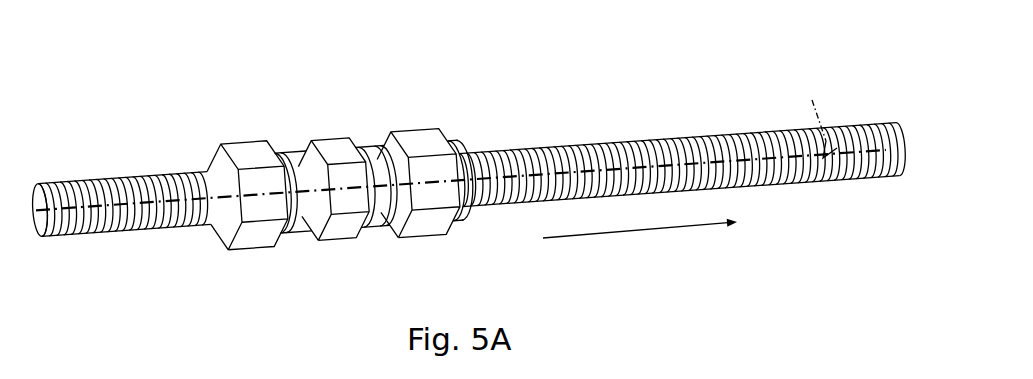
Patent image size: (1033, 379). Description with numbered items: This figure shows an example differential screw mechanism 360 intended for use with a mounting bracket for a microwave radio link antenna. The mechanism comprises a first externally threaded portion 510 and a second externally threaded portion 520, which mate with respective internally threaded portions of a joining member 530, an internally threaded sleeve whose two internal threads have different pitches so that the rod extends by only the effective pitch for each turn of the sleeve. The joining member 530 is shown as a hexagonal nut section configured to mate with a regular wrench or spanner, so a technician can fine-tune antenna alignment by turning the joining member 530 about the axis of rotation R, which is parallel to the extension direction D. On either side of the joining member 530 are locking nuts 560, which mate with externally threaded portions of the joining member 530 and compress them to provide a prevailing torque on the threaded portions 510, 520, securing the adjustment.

The differential screw mechanism 360 is at (96, 59).
The first externally threaded portion 510 is at (163, 194).
The second externally threaded portion 520 is at (498, 165).
The joining member 530 is at (338, 157).
The locking nuts 560 is at (250, 157).
The axis of rotation R is at (814, 116).
The extension direction D is at (640, 238).